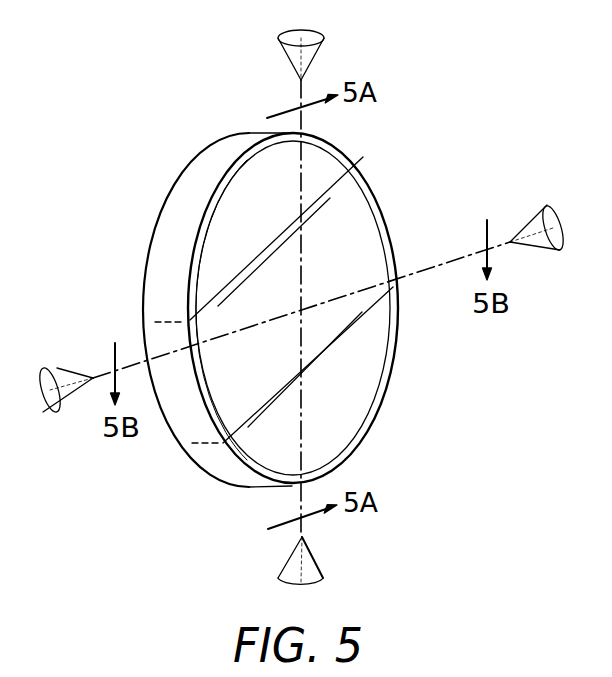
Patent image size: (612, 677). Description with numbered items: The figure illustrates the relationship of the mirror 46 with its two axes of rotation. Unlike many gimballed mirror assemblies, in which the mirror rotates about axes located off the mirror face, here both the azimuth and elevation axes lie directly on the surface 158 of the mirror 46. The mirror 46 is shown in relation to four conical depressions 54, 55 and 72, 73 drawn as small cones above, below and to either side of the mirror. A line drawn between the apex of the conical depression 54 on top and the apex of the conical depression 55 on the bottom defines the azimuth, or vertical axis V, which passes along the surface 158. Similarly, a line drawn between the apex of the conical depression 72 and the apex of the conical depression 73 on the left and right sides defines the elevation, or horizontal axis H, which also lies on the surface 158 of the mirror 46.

The mirror 46 is at (182, 217).
The conical depression 54 is at (318, 57).
The conical depression 55 is at (320, 567).
The conical depression 72 is at (64, 371).
The conical depression 73 is at (528, 222).
The surface of mirror 158 is at (250, 441).
The vertical axis V is at (303, 177).
The horizontal axis H is at (428, 266).